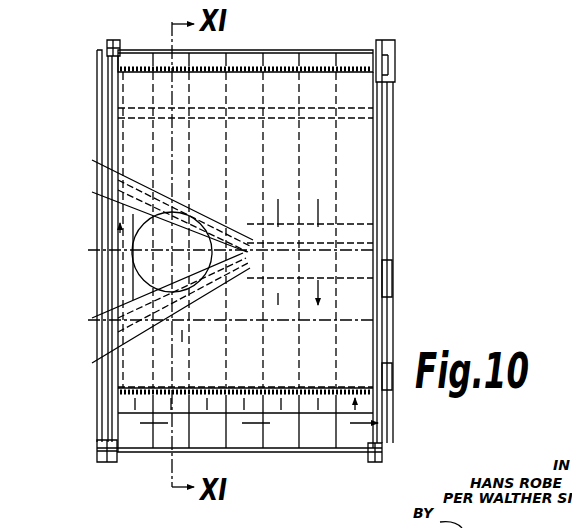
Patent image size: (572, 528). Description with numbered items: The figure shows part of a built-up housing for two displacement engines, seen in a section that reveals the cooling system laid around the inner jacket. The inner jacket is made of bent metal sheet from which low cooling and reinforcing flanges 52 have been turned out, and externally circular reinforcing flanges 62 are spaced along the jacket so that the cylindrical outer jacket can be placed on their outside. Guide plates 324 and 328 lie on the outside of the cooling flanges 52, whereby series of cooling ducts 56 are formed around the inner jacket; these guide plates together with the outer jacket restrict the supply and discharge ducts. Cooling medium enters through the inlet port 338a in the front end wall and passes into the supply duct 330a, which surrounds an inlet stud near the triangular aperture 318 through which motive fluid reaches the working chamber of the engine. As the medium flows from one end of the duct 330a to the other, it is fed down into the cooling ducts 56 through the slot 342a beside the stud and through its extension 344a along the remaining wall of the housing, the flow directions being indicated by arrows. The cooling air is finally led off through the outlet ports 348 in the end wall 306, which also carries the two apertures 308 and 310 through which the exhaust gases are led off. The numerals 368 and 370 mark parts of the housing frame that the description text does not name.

The left frame post with hook 368 is at (112, 55).
The reinforcing flanges 62 is at (157, 68).
The guide plate 328 is at (250, 67).
The cooling ducts 56 is at (310, 67).
The right frame hook 370 is at (378, 52).
The aperture 308 is at (388, 118).
The supply duct 330a is at (323, 232).
The extension 344a is at (347, 247).
The end wall 306 is at (383, 250).
The aperture 310 is at (390, 318).
The outlet ports 348 is at (388, 434).
The slot 342a is at (117, 320).
The inlet port 338a is at (135, 252).
The triangular aperture 318 is at (133, 303).
The guide plate 324 is at (240, 400).
The cooling and reinforcing flanges 52 is at (308, 400).